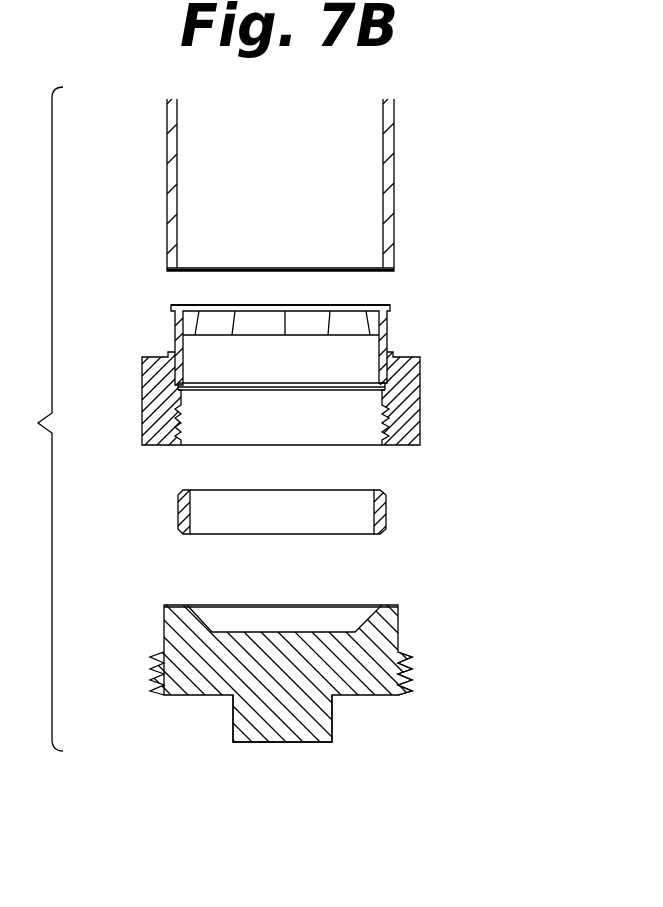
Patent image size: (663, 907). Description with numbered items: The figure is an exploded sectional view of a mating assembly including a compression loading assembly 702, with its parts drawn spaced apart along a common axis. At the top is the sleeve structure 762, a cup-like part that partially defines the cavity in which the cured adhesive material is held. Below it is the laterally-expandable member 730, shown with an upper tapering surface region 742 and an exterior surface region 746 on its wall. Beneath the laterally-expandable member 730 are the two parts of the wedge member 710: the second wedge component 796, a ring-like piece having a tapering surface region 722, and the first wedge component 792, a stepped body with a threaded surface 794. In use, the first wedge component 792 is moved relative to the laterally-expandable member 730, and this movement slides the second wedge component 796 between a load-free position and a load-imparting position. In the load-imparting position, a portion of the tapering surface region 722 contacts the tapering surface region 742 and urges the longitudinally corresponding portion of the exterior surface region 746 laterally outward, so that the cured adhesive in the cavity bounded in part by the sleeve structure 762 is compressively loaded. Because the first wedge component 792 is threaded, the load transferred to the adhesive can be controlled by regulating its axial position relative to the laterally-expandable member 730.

The compression loading assembly 702 is at (458, 517).
The wedge member 710 is at (172, 640).
The tapering surface region 722 is at (386, 497).
The laterally-expandable member 730 is at (412, 398).
The tapering surface region 742 is at (373, 319).
The exterior surface region 746 is at (176, 328).
The sleeve structure 762 is at (394, 218).
The first wedge component 792 is at (370, 695).
The threaded surface 794 is at (414, 665).
The second wedge component 796 is at (386, 523).